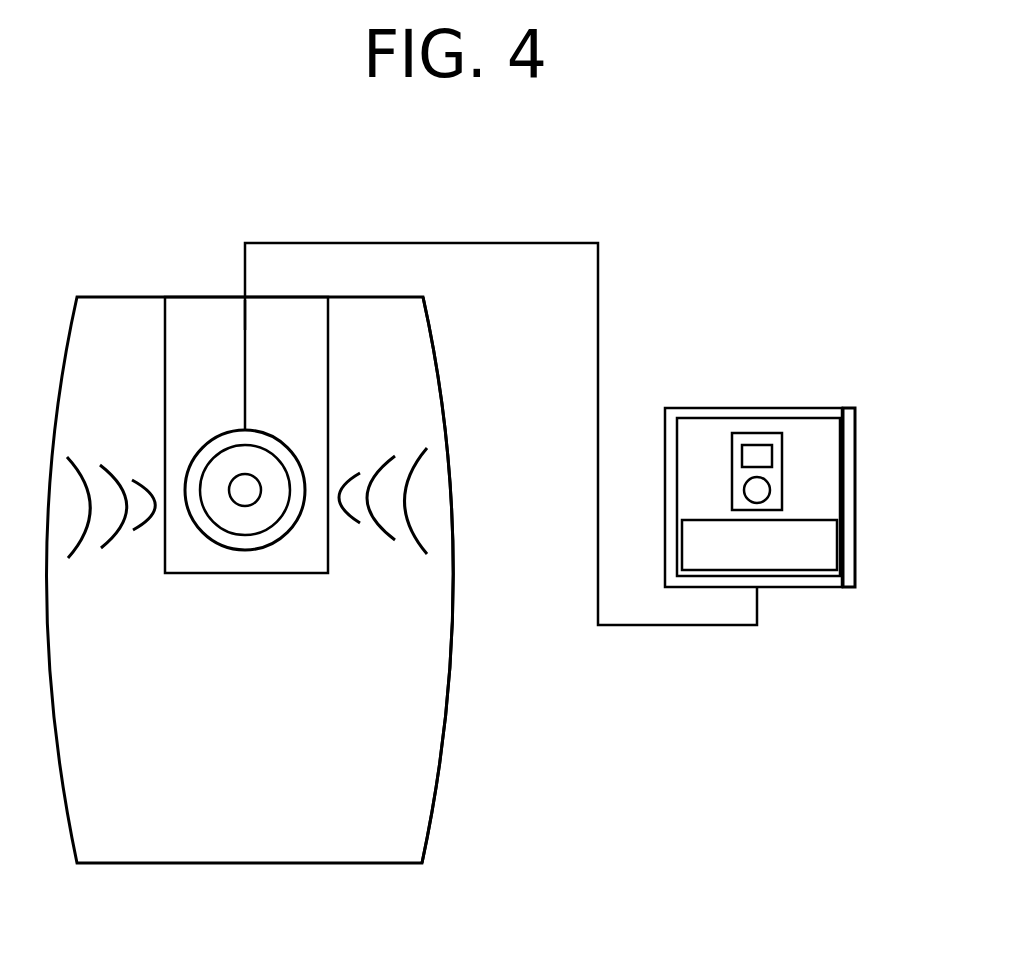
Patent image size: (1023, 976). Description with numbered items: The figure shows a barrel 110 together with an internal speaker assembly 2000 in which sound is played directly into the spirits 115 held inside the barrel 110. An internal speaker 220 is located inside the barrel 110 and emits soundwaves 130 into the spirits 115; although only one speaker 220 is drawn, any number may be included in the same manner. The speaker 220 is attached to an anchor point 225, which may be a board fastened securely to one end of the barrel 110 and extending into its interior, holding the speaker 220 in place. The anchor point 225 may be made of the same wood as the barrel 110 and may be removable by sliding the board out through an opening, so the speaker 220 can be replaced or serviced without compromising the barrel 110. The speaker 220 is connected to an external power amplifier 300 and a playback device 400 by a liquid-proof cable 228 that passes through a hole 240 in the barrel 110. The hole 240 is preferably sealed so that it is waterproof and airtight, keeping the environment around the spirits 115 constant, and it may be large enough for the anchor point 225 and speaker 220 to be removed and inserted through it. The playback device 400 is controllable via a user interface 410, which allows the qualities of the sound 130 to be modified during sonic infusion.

The internal speaker assembly 2000 is at (461, 197).
The barrel 110 is at (378, 867).
The spirits 115 is at (378, 732).
The soundwaves 130 is at (123, 573).
The internal speaker 220 is at (302, 533).
The anchor point 225 is at (300, 402).
The liquid-proof cable 228 is at (233, 328).
The hole 240 is at (242, 290).
The external power amplifier 300 is at (803, 550).
The playback device 400 is at (790, 442).
The user interface 410 is at (772, 483).